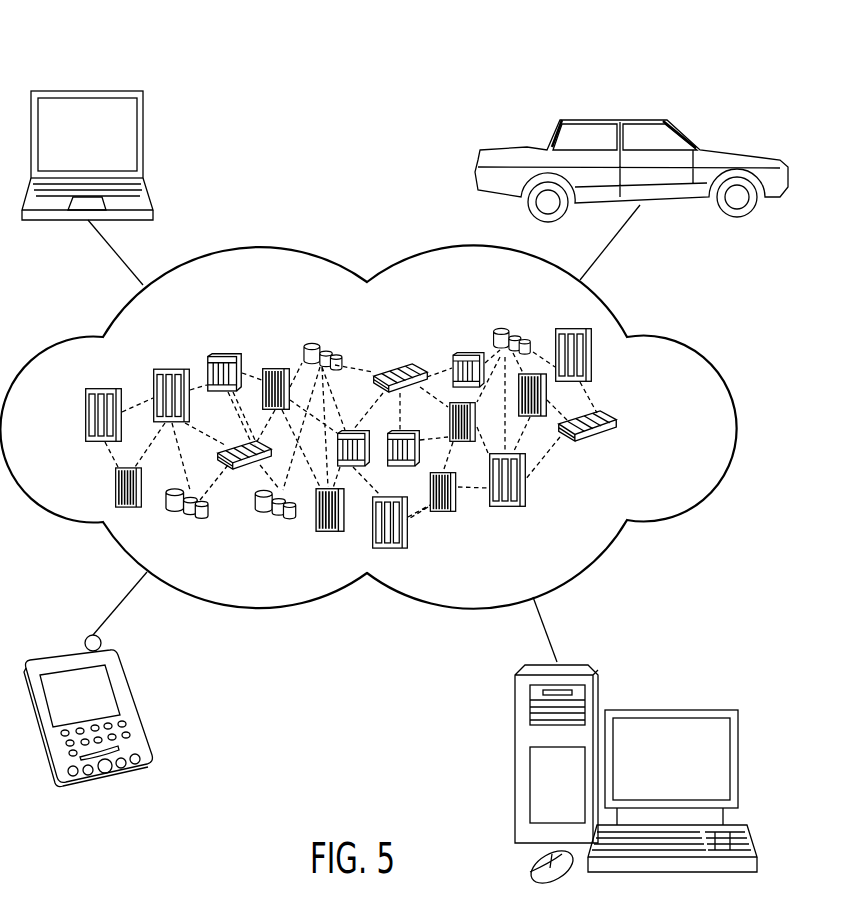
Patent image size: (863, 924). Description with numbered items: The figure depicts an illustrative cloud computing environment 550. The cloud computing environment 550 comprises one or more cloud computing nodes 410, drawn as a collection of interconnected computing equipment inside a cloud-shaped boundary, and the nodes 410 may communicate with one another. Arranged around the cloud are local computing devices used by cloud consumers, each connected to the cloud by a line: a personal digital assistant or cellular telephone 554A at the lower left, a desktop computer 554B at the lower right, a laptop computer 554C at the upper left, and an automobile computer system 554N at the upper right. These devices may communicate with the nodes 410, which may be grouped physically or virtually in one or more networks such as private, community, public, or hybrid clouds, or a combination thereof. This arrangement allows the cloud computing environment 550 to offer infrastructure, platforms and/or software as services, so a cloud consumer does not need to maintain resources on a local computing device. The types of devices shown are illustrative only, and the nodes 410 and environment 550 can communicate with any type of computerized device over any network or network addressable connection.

The cloud computing environment 550 is at (682, 340).
The cloud computing node 410 is at (625, 426).
The personal digital assistant (PDA) or cellular telephone 554A is at (68, 652).
The desktop computer 554B is at (670, 710).
The laptop computer 554C is at (88, 90).
The automobile computer system 554N is at (612, 118).